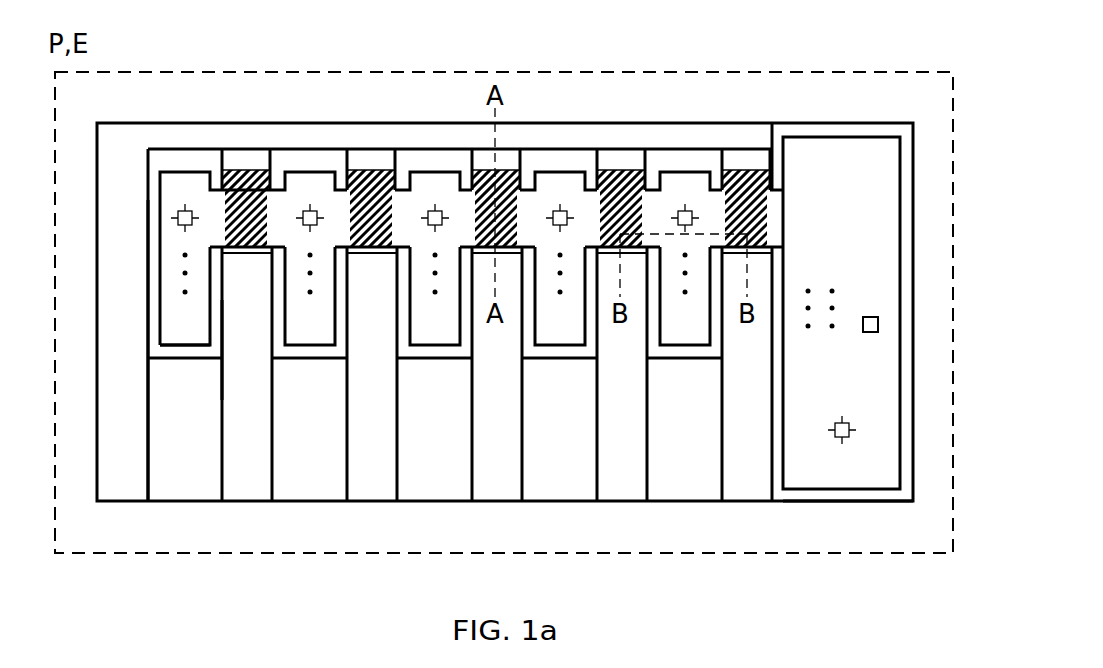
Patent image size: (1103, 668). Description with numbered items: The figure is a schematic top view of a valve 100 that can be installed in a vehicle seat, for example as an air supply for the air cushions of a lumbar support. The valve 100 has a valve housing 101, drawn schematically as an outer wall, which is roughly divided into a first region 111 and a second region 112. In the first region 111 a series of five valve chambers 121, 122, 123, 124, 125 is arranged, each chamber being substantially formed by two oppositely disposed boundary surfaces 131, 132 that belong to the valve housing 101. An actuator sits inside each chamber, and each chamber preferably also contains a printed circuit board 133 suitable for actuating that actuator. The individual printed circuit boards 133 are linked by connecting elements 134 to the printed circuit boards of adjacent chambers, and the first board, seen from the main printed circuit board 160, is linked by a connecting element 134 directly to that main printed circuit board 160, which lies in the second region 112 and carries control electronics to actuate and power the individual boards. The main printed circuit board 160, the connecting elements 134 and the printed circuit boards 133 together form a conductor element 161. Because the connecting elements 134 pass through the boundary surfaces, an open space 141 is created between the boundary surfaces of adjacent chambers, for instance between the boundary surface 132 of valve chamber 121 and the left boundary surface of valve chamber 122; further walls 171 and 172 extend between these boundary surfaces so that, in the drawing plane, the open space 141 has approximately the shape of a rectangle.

The valve 100 is at (940, 47).
The valve housing 101 is at (828, 503).
The first region 111 is at (248, 530).
The second region 112 is at (808, 108).
The valve chamber 121 is at (168, 167).
The valve chamber 122 is at (305, 165).
The valve chamber 123 is at (430, 160).
The valve chamber 124 is at (553, 160).
The valve chamber 125 is at (678, 160).
The boundary surface 131 is at (148, 293).
The boundary surface 132 is at (224, 336).
The printed circuit board 133 is at (185, 347).
The connecting element 134 is at (230, 198).
The open space 141 is at (220, 170).
The main printed circuit board 160 is at (875, 265).
The conductor element 161 is at (862, 468).
The further wall 171 is at (247, 255).
The further wall 172 is at (248, 170).